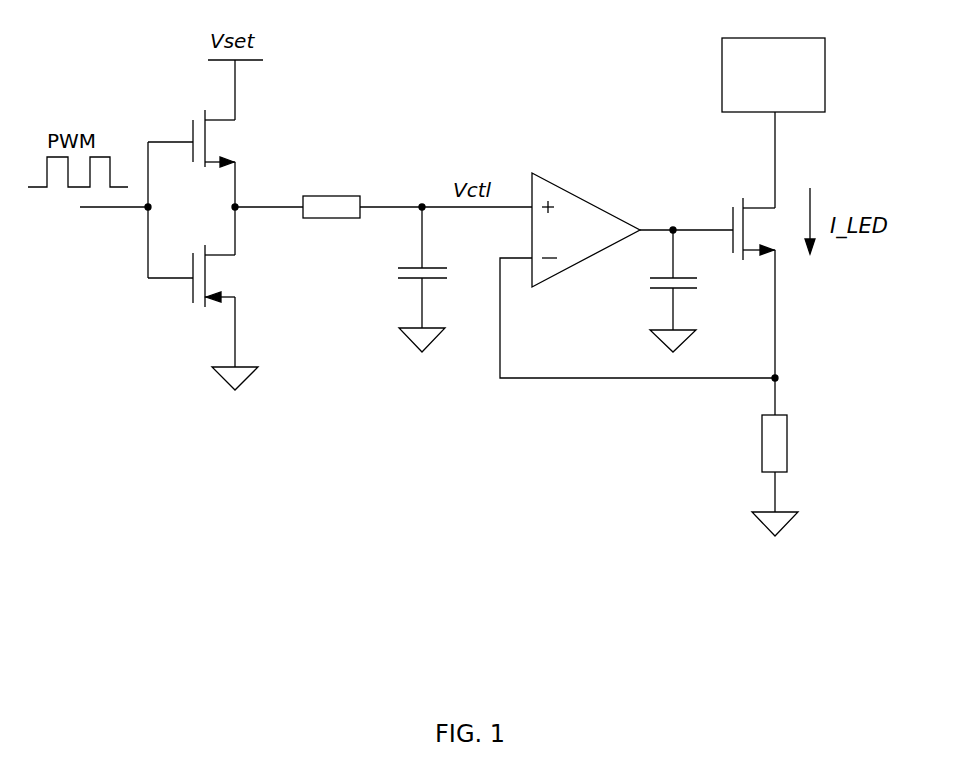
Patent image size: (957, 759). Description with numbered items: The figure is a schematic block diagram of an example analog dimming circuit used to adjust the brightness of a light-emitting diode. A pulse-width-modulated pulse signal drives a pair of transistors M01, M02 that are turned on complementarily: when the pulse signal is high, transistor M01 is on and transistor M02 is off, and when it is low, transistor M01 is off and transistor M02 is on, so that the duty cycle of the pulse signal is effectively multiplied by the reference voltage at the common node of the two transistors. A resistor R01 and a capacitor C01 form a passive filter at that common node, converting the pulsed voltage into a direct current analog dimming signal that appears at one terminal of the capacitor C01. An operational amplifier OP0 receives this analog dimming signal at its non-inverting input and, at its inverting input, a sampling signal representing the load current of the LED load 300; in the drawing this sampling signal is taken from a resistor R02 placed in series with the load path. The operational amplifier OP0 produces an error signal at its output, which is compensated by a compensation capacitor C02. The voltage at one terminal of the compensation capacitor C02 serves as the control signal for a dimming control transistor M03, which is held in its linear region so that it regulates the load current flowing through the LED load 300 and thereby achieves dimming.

The transistor M01 is at (216, 158).
The transistor M02 is at (215, 298).
The dimming control transistor M03 is at (745, 263).
The resistor R01 is at (331, 188).
The current sensing resistor R02 is at (794, 475).
The capacitor C01 is at (402, 279).
The compensation capacitor C02 is at (650, 291).
The operational amplifier OP0 is at (637, 275).
The LED load 300 is at (794, 100).